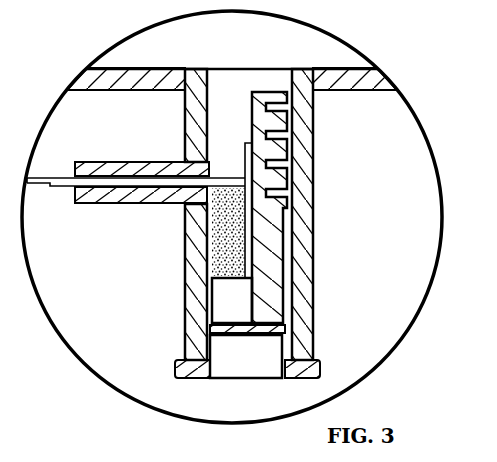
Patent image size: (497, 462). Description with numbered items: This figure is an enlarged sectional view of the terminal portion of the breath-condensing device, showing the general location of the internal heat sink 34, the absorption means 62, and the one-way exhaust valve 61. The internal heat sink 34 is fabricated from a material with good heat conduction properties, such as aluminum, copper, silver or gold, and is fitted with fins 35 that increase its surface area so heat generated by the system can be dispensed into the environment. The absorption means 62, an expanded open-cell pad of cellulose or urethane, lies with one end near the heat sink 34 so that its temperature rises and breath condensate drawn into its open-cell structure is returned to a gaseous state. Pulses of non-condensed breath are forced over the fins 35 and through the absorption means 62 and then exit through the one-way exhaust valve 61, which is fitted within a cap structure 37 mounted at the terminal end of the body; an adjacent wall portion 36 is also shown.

The internal heat sink 34 is at (314, 323).
The fins 35 is at (290, 199).
The top plate 36 is at (368, 98).
The cap structure 37 is at (200, 364).
The one-way exhaust valve 61 is at (246, 374).
The absorption means 62 is at (213, 243).